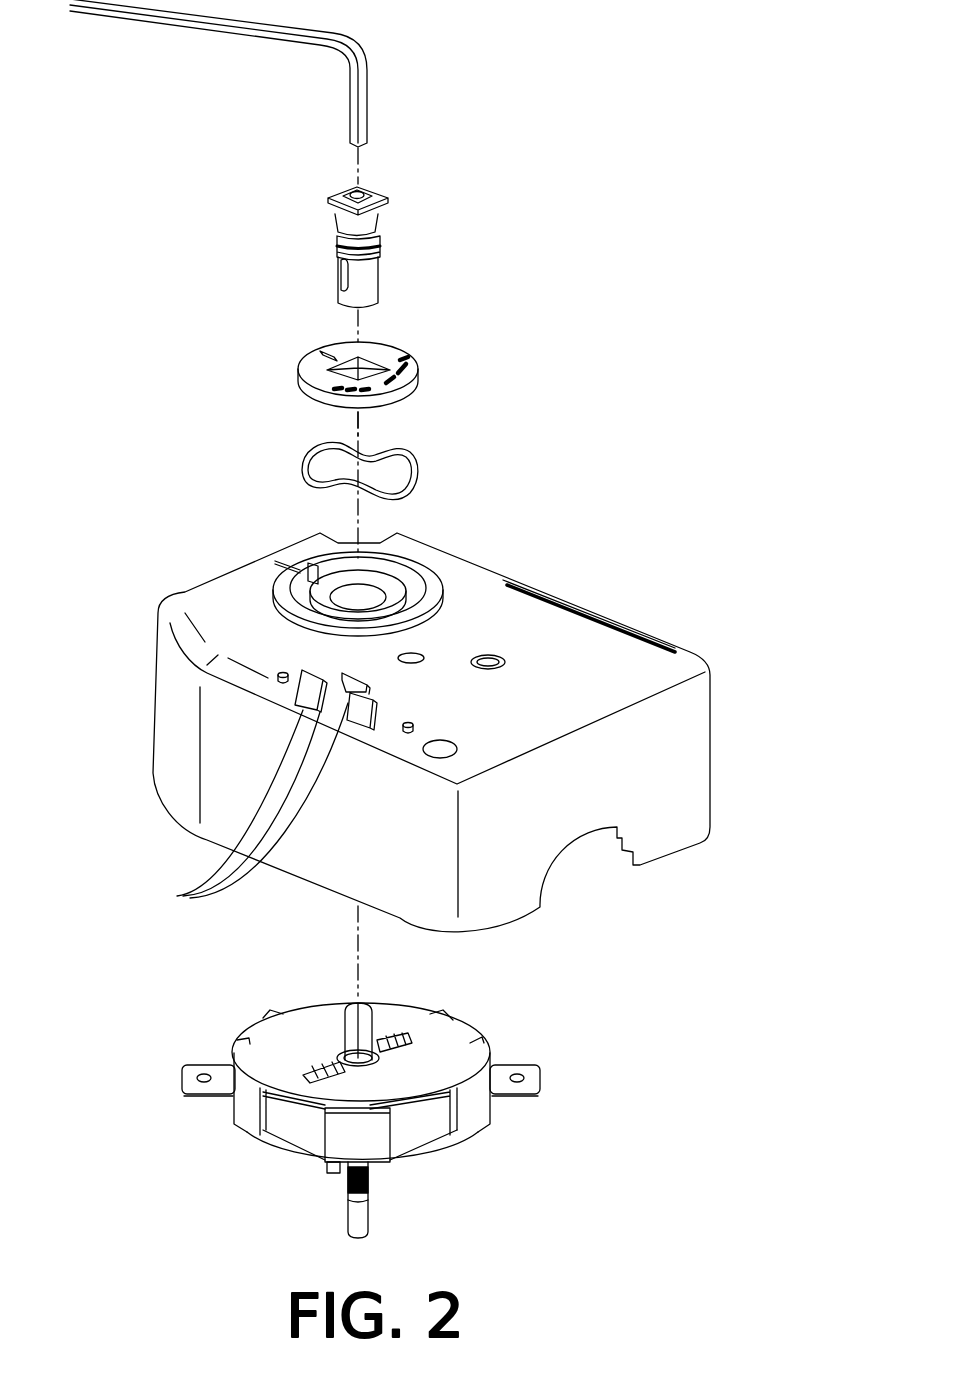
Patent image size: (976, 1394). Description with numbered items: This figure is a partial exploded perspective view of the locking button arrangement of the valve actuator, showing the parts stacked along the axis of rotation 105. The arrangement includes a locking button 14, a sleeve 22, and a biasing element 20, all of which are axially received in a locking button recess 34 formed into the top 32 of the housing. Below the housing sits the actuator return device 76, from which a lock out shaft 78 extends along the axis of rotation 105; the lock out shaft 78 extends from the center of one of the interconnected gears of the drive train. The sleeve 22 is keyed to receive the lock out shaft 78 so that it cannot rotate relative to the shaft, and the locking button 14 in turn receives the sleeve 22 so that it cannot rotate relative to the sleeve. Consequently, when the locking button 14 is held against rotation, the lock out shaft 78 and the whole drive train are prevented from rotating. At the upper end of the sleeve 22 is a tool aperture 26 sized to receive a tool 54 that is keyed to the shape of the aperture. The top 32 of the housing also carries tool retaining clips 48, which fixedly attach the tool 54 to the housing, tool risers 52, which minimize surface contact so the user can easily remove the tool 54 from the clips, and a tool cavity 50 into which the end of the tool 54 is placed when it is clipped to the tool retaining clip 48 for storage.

The tool 54 is at (370, 95).
The tool aperture 26 is at (338, 180).
The sleeve 22 is at (382, 262).
The locking button 14 is at (420, 372).
The axis of rotation 105 is at (357, 428).
The biasing element 20 is at (417, 476).
The locking button recess 34 is at (427, 581).
The top 32 is at (710, 760).
The tool risers 52 is at (283, 685).
The tool cavity 50 is at (447, 756).
The tool retaining clips 48 is at (245, 808).
The actuator return device 76 is at (423, 1120).
The lock out shaft 78 is at (368, 1027).